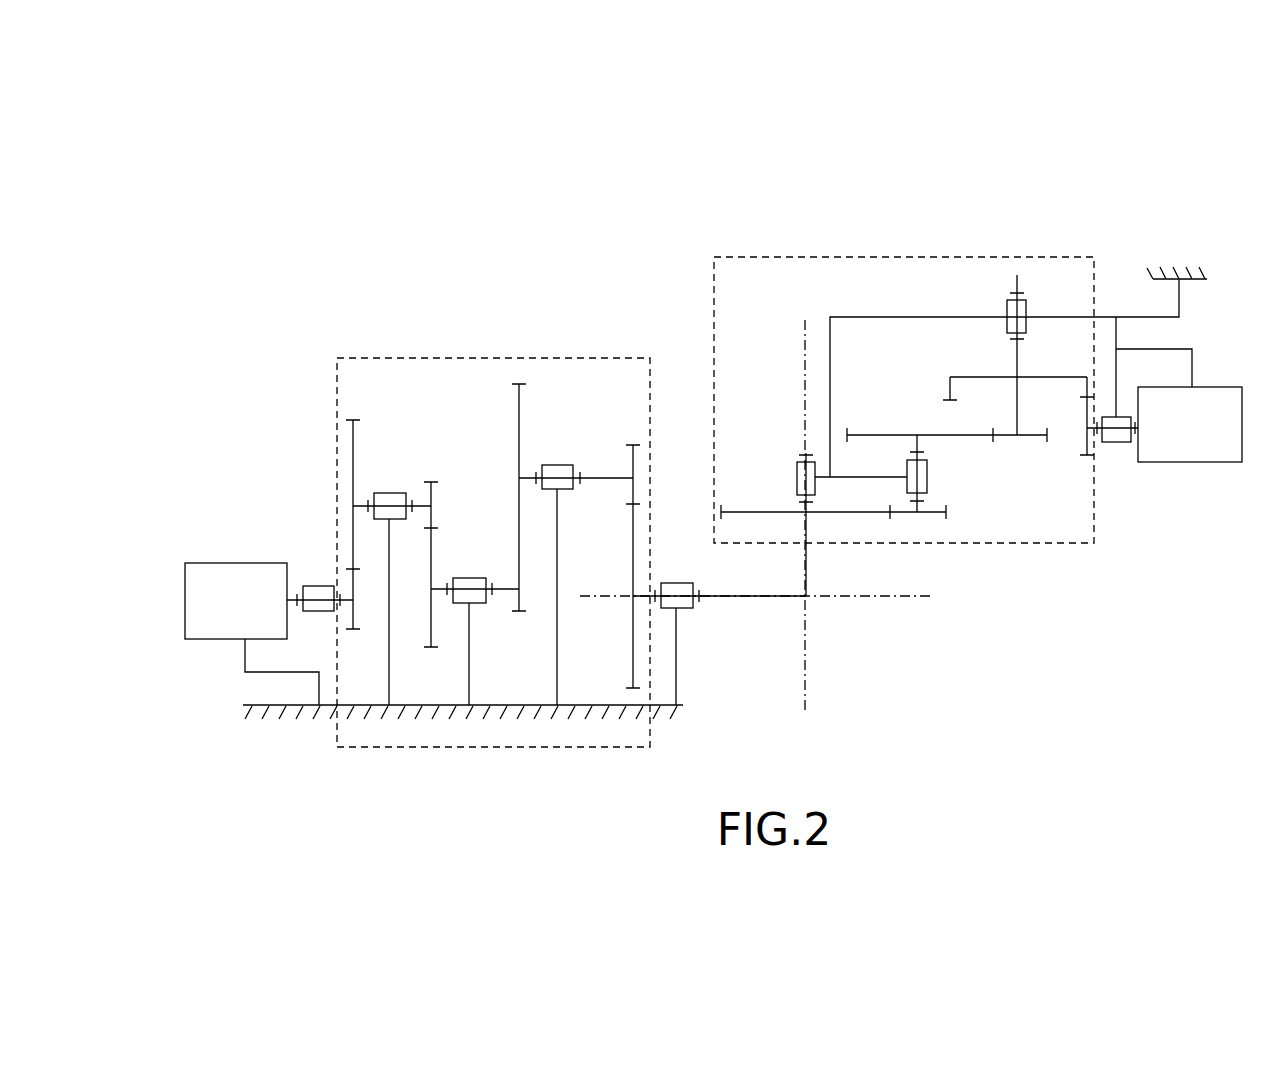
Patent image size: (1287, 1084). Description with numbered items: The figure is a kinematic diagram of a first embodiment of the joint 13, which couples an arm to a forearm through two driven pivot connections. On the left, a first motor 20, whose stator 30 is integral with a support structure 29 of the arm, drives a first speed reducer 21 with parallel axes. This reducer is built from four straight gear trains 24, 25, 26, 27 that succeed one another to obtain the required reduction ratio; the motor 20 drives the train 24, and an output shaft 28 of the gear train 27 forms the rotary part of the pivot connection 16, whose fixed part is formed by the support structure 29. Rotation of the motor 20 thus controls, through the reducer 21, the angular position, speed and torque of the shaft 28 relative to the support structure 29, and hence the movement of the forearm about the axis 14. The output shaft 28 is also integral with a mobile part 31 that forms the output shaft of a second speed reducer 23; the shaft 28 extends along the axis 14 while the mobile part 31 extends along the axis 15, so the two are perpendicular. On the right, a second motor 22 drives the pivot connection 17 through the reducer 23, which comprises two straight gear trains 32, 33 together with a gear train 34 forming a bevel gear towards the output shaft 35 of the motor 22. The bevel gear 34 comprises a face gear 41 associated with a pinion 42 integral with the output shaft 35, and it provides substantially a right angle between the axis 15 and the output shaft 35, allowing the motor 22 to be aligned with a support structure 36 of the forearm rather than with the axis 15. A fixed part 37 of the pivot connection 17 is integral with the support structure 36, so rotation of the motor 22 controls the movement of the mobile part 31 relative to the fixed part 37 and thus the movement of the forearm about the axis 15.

The joint 13 is at (526, 231).
The axis 14 is at (928, 596).
The axis 15 is at (808, 663).
The pivot connection 16 is at (690, 612).
The pivot connection 17 is at (797, 478).
The first motor 20 is at (236, 601).
The first speed reducer 21 is at (440, 358).
The second motor 22 is at (1179, 405).
The second speed reducer 23 is at (1003, 545).
The gear train 24 is at (353, 485).
The gear train 25 is at (431, 565).
The gear train 26 is at (519, 515).
The gear train 27 is at (633, 595).
The output shaft 28 is at (731, 598).
The support structure 29 is at (260, 718).
The stator 30 is at (243, 563).
The mobile part 31 is at (810, 550).
The gear train 32 is at (773, 510).
The gear train 33 is at (960, 438).
The gear train 34 is at (1090, 176).
The output shaft 35 is at (1095, 440).
The support structure 36 is at (1207, 279).
The fixed part 37 is at (815, 455).
The face gear 41 is at (978, 377).
The pinion 42 is at (1087, 407).